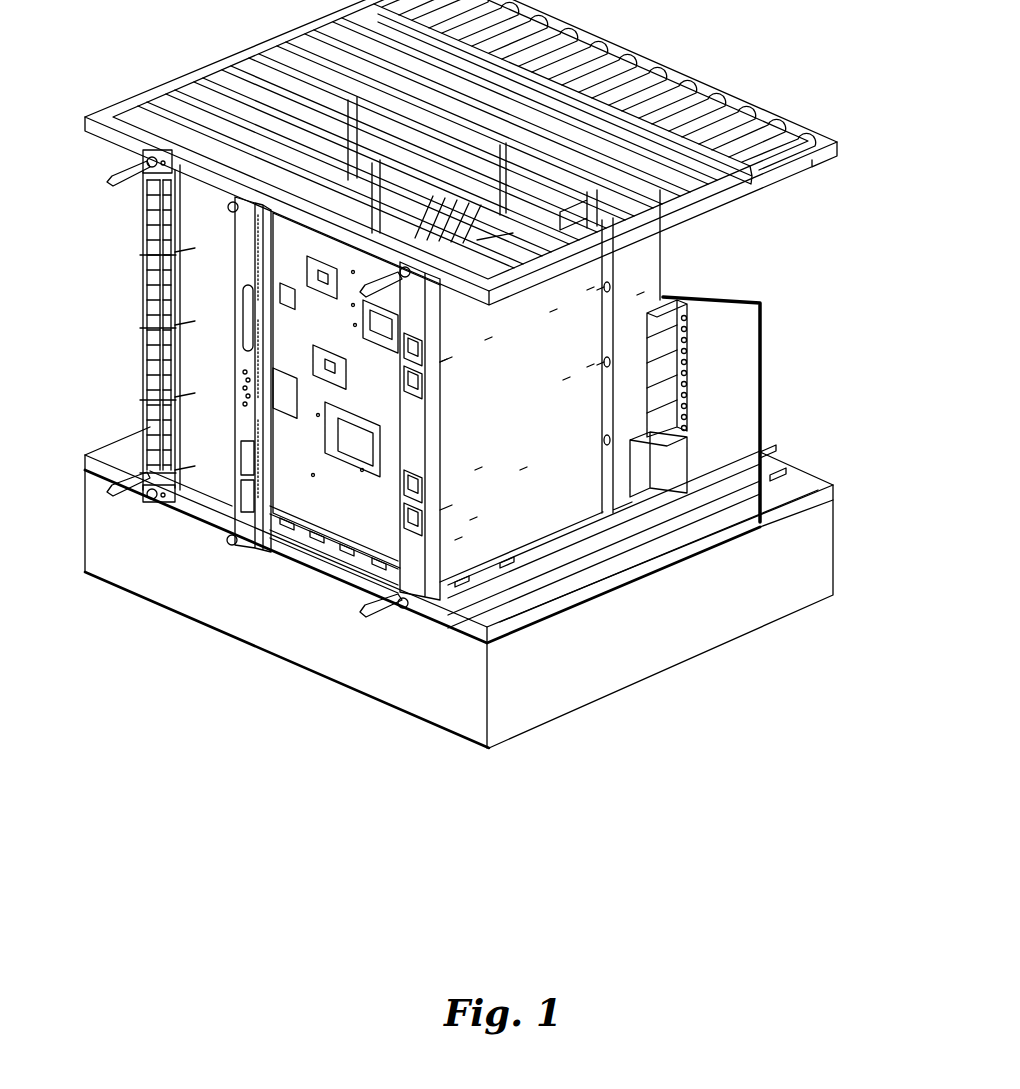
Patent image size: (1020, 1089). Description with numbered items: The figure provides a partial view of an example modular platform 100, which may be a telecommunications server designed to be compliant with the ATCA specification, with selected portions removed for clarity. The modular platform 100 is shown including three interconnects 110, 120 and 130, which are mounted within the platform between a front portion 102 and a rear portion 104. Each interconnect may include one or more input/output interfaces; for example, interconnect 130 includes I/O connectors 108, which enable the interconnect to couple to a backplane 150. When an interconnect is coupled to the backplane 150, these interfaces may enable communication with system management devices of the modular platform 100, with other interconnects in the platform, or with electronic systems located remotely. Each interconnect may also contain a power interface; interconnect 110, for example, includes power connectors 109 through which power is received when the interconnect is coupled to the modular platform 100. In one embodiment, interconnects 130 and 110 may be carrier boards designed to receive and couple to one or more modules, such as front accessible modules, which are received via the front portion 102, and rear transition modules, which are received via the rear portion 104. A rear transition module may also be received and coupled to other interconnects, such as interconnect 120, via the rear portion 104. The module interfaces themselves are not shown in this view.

The modular platform 100 is at (708, 693).
The front portion 102 is at (306, 512).
The rear portion 104 is at (695, 253).
The I/O connectors 108 is at (760, 303).
The power connectors 109 is at (716, 462).
The interconnect 110 is at (147, 318).
The interconnect 120 is at (321, 392).
The interconnect 130 is at (513, 462).
The backplane 150 is at (740, 490).